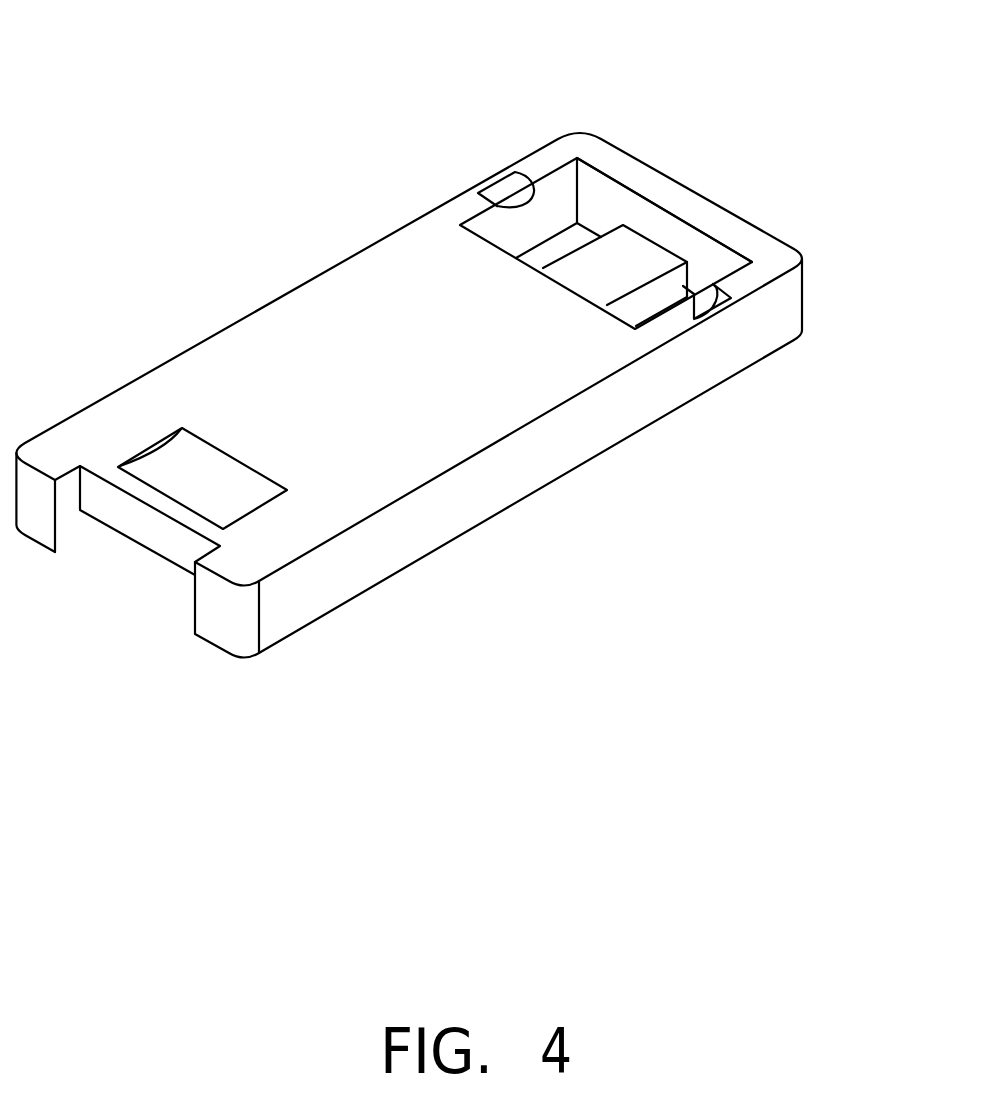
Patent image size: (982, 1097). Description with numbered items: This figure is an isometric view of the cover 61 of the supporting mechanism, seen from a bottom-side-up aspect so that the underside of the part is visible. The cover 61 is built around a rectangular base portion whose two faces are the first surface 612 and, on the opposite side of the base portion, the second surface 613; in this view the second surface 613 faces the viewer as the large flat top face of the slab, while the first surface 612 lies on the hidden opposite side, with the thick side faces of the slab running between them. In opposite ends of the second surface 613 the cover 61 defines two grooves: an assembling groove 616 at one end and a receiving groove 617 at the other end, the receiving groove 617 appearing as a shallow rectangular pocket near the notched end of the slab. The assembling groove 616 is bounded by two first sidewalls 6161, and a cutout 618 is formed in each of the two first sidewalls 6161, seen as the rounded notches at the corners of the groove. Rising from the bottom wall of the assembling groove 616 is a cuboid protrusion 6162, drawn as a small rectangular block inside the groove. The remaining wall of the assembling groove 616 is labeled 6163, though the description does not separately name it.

The cover 61 is at (453, 345).
The first surface 612 is at (347, 602).
The second surface 613 is at (413, 252).
The assembling groove 616 is at (605, 200).
The first sidewall 6161 is at (545, 163).
The cuboid protrusion 6162 is at (640, 270).
The side wall of receiving groove 6163 is at (687, 200).
The receiving groove 617 is at (212, 478).
The cutout 618 is at (518, 203).